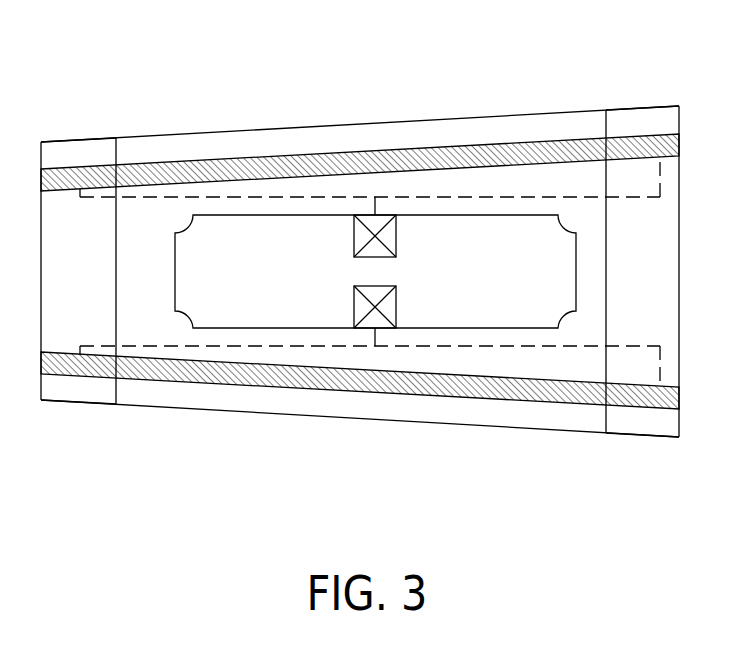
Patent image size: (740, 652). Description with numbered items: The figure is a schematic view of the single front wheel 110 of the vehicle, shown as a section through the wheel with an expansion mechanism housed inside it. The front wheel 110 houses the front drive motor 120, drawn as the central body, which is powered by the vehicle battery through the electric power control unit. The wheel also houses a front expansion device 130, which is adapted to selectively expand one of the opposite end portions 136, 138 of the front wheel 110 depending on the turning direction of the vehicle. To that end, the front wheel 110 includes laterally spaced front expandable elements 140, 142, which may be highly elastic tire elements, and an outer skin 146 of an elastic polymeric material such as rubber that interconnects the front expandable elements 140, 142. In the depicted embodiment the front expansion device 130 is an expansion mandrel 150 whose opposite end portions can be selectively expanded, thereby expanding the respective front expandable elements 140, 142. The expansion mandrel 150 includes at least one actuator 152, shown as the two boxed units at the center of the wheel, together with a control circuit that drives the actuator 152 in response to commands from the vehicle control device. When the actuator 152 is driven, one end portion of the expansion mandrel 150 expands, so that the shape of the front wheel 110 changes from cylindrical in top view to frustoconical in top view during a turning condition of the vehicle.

The front wheel 110 is at (147, 458).
The front drive motor 120 is at (235, 225).
The front expansion device 130 is at (441, 397).
The end portion 136 is at (75, 139).
The end portion 138 is at (645, 106).
The front expandable element 140 is at (75, 403).
The front expandable element 142 is at (650, 418).
The outer skin 146 is at (368, 121).
The expansion mandrel 150 is at (227, 385).
The actuator 152 is at (394, 235).